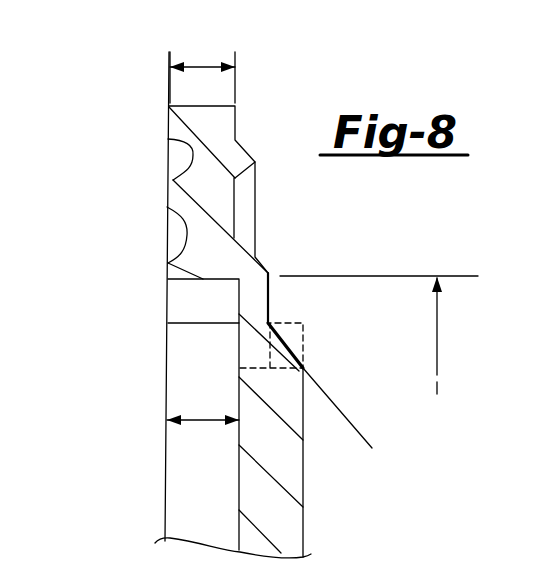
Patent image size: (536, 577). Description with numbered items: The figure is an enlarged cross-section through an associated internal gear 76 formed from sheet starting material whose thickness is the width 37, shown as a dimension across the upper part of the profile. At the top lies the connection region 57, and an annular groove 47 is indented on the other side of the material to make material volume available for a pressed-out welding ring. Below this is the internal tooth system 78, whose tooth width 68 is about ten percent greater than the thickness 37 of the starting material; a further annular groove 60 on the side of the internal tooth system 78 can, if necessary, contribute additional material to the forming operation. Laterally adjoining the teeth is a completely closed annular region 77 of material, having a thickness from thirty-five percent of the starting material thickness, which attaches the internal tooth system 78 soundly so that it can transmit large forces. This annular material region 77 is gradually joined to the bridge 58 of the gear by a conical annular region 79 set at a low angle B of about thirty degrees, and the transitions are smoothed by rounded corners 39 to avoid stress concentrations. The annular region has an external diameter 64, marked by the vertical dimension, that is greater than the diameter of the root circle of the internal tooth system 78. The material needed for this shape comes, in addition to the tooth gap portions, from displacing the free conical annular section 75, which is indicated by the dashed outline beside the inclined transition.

The width of the starting material 37 is at (200, 66).
The connection region 57 is at (202, 157).
The annular groove 47 is at (180, 162).
The annular groove 60 is at (178, 233).
The internal tooth system 78 is at (188, 290).
The closed annular region of material 77 is at (250, 294).
The internal gear 76 is at (100, 365).
The tooth width 68 is at (200, 419).
The rounded corners 39 is at (268, 273).
The free conical annular section 75 is at (298, 334).
The conical annular region 79 is at (282, 363).
The external diameter 64 is at (379, 355).
The angle β B is at (368, 452).
The bridge 58 is at (273, 528).